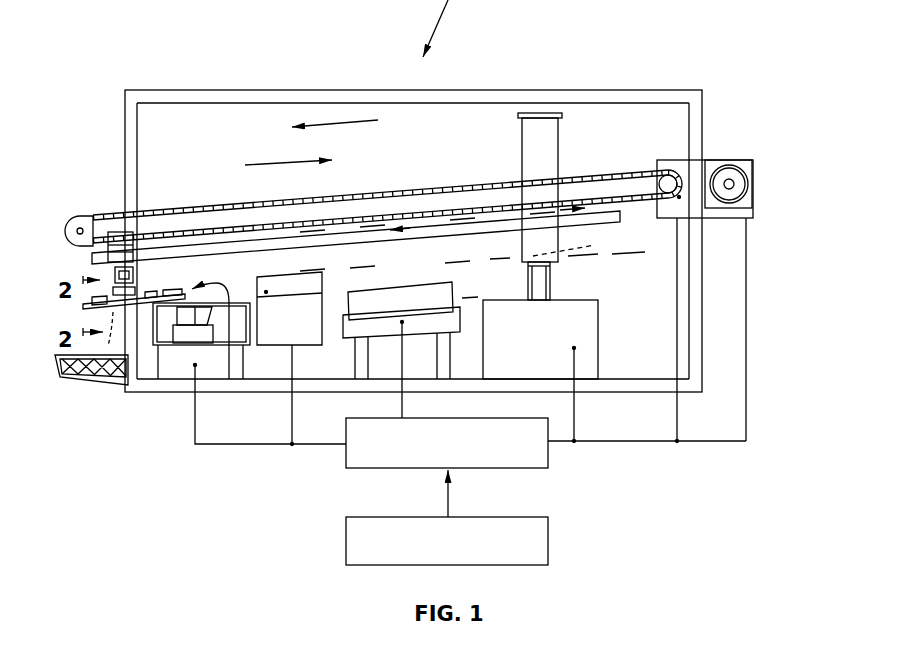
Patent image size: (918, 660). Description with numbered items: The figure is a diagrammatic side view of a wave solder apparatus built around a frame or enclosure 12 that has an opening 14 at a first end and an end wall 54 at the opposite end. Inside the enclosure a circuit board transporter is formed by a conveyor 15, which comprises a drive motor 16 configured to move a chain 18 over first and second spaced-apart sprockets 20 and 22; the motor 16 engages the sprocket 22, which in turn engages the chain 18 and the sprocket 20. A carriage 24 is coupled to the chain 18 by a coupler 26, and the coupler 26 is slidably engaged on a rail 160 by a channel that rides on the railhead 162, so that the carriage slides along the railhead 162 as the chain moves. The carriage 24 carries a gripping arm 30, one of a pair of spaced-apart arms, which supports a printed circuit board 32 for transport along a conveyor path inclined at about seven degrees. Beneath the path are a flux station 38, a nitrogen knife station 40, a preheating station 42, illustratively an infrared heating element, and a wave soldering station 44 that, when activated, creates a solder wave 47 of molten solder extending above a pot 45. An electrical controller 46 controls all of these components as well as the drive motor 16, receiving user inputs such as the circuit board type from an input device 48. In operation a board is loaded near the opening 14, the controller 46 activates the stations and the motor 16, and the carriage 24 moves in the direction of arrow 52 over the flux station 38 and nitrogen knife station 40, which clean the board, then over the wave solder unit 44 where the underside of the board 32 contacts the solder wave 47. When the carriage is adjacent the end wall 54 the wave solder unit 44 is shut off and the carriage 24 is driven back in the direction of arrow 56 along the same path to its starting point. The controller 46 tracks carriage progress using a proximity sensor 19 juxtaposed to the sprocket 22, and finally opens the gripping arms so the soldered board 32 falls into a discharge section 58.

The frame or enclosure 12 is at (477, 97).
The opening 14 is at (115, 173).
The conveyor 15 is at (612, 190).
The drive motor 16 is at (733, 157).
The chain 18 is at (417, 190).
The proximity sensor 19 is at (679, 197).
The first sprocket 20 is at (83, 217).
The second sprocket 22 is at (669, 171).
The carriage 24 is at (143, 272).
The coupler 26 is at (118, 238).
The gripping arm 30 is at (83, 306).
The printed circuit board 32 is at (229, 379).
The flux station 38 is at (180, 358).
The nitrogen knife station 40 is at (292, 310).
The preheating station 42 is at (385, 302).
The wave soldering station 44 is at (575, 325).
The pot 45 is at (551, 283).
The electrical controller 46 is at (545, 460).
The solder wave 47 is at (580, 243).
The input device 48 is at (352, 540).
The arrow 52 is at (270, 163).
The end wall 54 is at (695, 322).
The arrow 56 is at (355, 122).
The discharge section 58 is at (83, 373).
The rail 160 is at (92, 263).
The railhead 162 is at (93, 260).